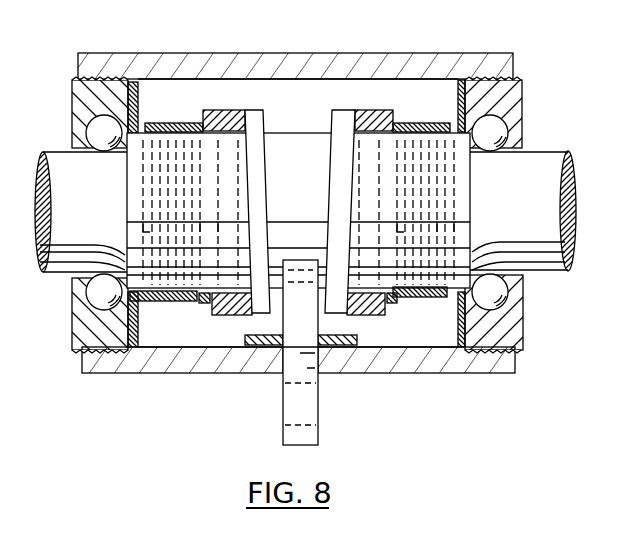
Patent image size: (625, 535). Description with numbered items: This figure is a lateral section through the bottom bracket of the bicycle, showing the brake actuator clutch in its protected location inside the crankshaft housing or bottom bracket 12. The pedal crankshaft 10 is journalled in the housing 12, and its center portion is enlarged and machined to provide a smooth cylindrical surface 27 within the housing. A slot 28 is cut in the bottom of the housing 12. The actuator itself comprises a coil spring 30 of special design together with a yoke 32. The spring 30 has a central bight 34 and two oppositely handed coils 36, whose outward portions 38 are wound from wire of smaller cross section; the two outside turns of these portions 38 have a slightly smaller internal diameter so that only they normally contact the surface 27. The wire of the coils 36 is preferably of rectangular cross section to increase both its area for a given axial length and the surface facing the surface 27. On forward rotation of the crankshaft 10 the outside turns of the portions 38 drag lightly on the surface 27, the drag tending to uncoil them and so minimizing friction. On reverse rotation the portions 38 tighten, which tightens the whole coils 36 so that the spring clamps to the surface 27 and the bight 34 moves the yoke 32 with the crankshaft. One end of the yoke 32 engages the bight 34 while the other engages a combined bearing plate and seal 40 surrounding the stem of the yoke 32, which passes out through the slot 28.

The pedal crankshaft 10 is at (540, 165).
The crankshaft housing or bottom bracket 12 is at (391, 54).
The smooth cylindrical surface 27 is at (300, 133).
The slot 28 is at (272, 380).
The coil spring 30 is at (197, 325).
The yoke 32 is at (318, 385).
The central bight 34 is at (300, 262).
The oppositely handed coils 36 is at (237, 112).
The outward portions 38 is at (178, 127).
The combined bearing plate and seal 40 is at (357, 342).